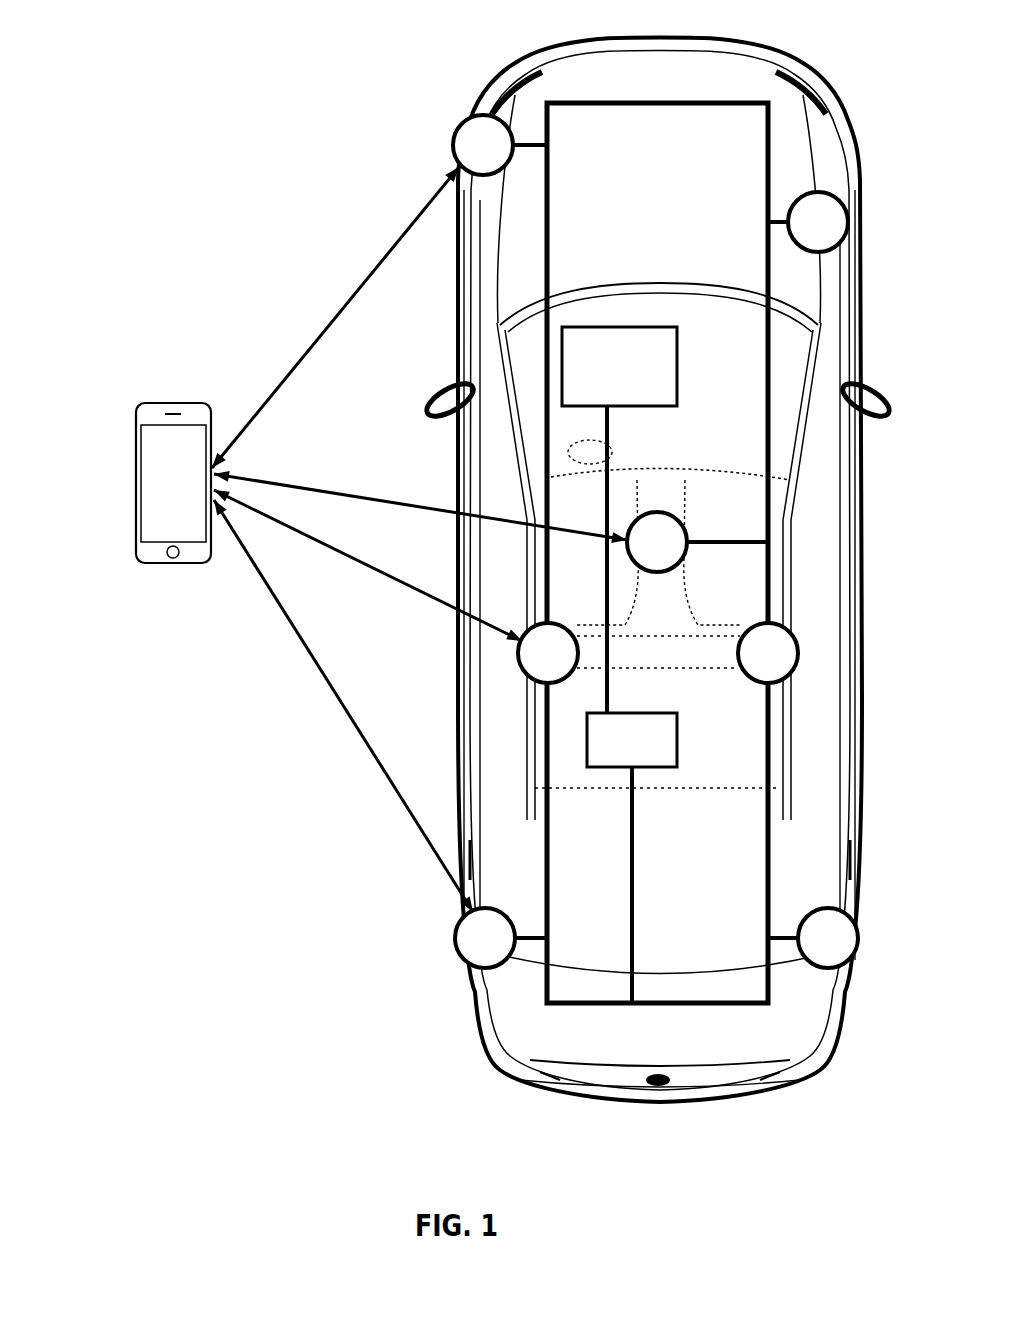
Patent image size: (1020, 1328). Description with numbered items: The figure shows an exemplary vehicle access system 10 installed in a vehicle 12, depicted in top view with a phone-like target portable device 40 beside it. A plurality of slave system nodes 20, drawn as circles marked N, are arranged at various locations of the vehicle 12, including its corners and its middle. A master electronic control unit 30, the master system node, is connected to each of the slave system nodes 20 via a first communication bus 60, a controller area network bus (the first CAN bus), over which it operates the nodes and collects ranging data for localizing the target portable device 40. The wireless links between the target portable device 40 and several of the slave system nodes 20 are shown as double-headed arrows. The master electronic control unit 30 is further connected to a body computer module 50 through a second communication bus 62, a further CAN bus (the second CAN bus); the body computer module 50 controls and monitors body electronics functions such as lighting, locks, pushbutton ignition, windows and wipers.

The vehicle access system 10 is at (108, 121).
The vehicle 12 is at (755, 46).
The slave system node 20 is at (460, 118).
The master electronic control unit 30 is at (678, 746).
The target portable device 40 is at (134, 430).
The body computer module 50 is at (678, 366).
The first communication bus 60 is at (633, 900).
The second communication bus 62 is at (607, 623).